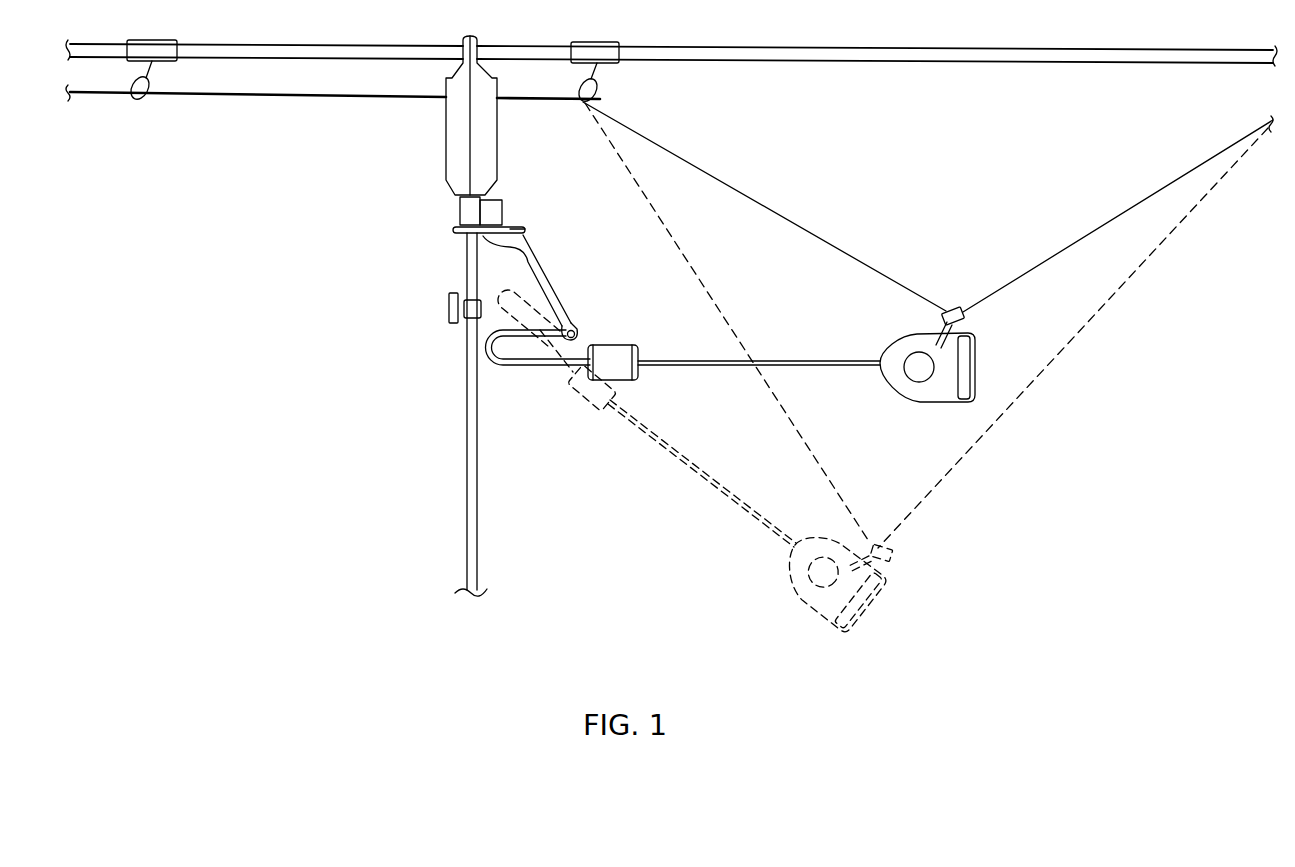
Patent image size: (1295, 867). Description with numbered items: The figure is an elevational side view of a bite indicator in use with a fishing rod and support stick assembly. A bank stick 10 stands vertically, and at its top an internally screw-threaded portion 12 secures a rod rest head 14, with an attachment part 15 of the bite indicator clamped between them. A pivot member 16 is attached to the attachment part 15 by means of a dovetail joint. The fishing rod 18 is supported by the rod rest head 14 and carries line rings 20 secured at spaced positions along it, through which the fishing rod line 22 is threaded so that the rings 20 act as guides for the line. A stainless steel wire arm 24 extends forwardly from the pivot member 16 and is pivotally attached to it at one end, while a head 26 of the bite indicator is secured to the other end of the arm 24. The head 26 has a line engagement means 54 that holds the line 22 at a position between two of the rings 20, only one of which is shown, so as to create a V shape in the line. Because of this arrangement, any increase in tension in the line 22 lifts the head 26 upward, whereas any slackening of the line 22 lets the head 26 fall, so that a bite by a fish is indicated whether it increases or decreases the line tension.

The bank stick 10 is at (467, 443).
The internally screw-threaded portion 12 is at (468, 245).
The rod rest head 14 is at (444, 176).
The attachment part 15 is at (513, 225).
The pivot member 16 is at (553, 283).
The fishing rod 18 is at (980, 62).
The line rings 20 is at (135, 98).
The fishing rod line 22 is at (327, 95).
The stainless steel wire arm 24 is at (792, 365).
The head 26 is at (919, 367).
The line engagement means 54 is at (955, 308).